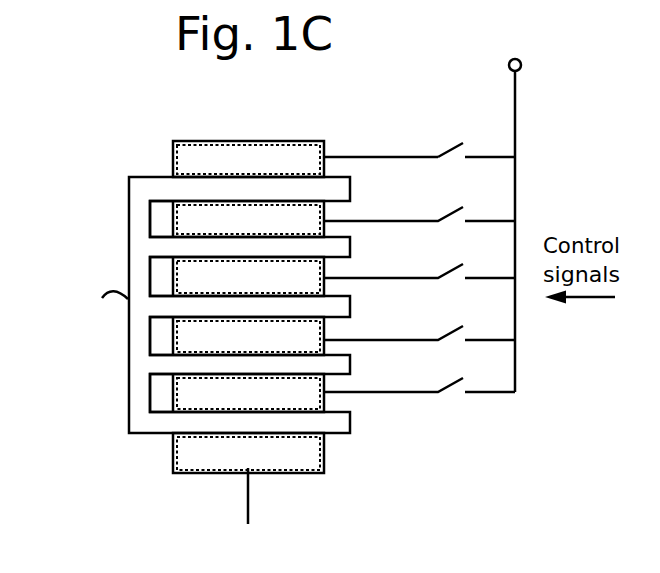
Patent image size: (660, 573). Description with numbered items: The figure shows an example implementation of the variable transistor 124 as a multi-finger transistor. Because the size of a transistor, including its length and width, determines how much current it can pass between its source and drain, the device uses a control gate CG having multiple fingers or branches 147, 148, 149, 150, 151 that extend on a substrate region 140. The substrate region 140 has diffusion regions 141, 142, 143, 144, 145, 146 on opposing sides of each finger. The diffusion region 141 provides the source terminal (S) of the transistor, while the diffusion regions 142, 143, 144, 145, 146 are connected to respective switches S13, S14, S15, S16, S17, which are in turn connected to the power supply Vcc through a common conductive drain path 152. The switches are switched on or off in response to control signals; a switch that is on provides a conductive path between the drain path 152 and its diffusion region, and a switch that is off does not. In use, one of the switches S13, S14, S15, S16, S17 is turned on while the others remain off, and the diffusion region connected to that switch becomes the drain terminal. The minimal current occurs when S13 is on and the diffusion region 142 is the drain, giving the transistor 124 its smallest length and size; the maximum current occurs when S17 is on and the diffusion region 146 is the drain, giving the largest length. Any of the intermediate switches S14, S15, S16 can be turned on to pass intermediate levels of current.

The variable transistor 124 is at (149, 106).
The substrate region 140 is at (313, 138).
The diffusion region 141 is at (248, 453).
The diffusion region 142 is at (237, 393).
The diffusion region 143 is at (237, 336).
The diffusion region 144 is at (237, 276).
The diffusion region 145 is at (237, 219).
The diffusion region 146 is at (248, 159).
The finger 147 is at (351, 428).
The finger 148 is at (351, 368).
The finger 149 is at (351, 312).
The finger 150 is at (351, 253).
The finger 151 is at (351, 195).
The common conductive drain path 152 is at (516, 111).
The switch S13 is at (419, 401).
The switch S14 is at (419, 349).
The switch S15 is at (419, 285).
The switch S16 is at (419, 227).
The switch S17 is at (473, 165).